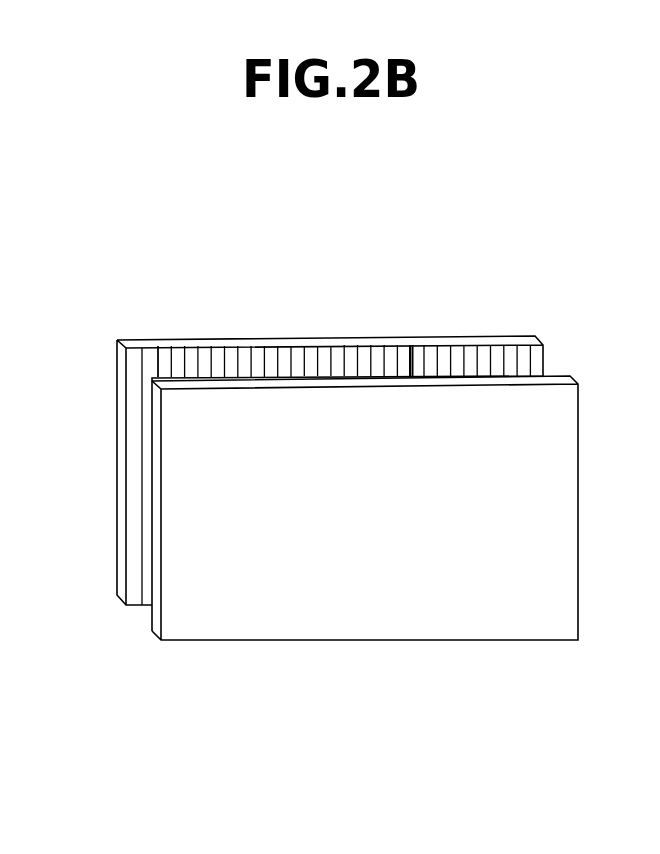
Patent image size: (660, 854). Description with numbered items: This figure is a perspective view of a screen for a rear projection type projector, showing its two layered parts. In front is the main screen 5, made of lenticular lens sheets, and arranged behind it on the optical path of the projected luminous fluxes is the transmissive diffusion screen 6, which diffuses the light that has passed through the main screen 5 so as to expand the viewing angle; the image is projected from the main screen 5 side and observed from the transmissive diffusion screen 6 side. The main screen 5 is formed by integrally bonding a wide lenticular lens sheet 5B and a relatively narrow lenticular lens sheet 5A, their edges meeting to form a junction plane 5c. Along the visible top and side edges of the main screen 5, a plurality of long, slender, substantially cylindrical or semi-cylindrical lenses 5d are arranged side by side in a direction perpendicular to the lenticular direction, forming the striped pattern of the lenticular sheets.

The main screen 5 is at (545, 355).
The lenticular lens sheet 5A is at (542, 316).
The lenticular lens sheet 5B is at (398, 316).
The junction plane 5c is at (402, 368).
The lenses 5d is at (143, 368).
The transmissive diffusion screen 6 is at (568, 453).